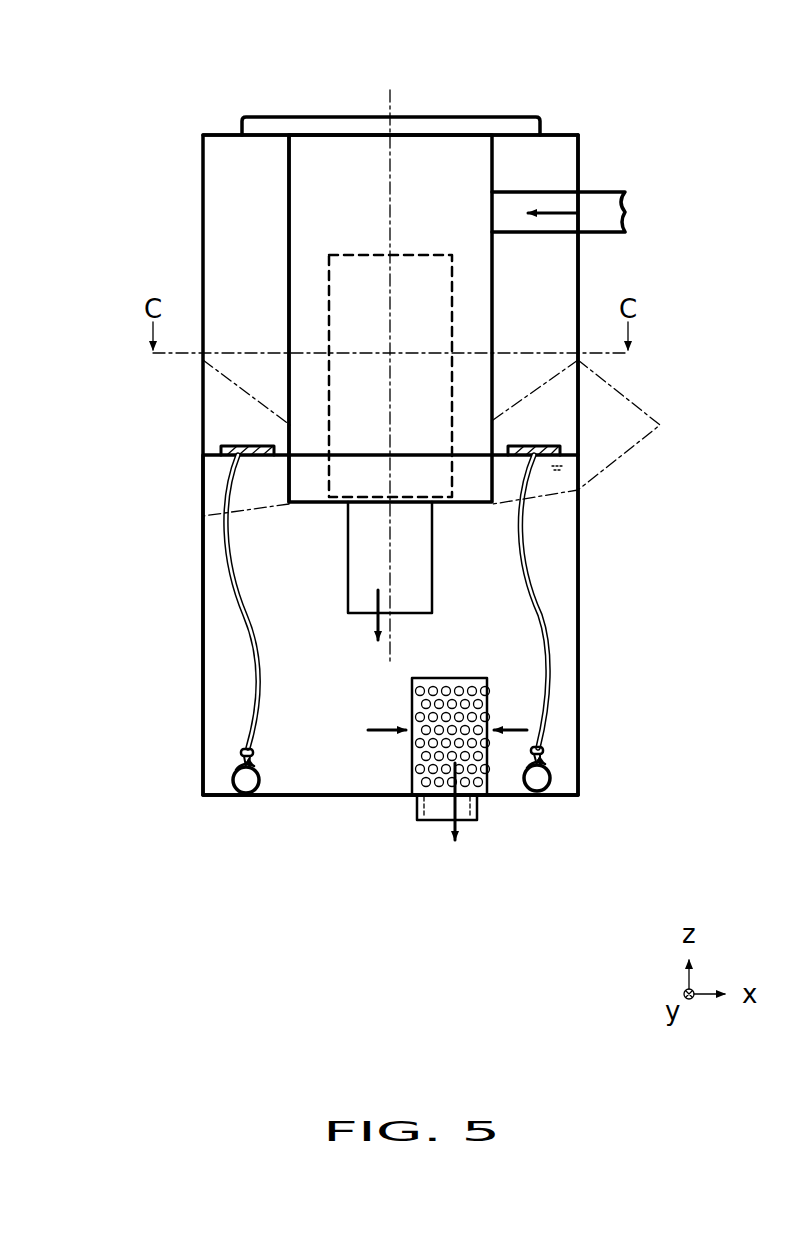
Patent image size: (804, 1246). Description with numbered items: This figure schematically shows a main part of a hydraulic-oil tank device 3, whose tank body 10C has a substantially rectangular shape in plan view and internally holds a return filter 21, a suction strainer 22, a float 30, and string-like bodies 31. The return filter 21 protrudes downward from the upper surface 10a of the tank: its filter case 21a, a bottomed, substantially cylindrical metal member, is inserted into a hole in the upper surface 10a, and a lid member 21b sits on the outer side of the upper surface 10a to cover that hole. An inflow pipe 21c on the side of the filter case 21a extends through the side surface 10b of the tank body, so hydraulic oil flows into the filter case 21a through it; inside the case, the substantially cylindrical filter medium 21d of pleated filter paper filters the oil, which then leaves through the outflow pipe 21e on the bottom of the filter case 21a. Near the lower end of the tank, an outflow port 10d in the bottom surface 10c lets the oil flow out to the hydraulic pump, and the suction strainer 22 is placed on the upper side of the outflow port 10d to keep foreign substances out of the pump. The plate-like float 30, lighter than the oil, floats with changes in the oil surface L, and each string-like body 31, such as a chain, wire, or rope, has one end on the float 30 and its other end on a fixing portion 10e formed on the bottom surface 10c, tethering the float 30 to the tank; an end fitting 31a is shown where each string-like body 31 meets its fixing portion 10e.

The hydraulic-oil tank device 3 is at (655, 39).
The upper surface 10a is at (563, 133).
The side surface 10b is at (583, 265).
The tank body 10C is at (583, 565).
The bottom surface 10c is at (565, 797).
The outflow port 10d is at (477, 822).
The fixing portion 10e is at (234, 795).
The return filter 21 is at (285, 185).
The filter case 21a is at (287, 290).
The lid member 21b is at (262, 128).
The inflow pipe 21c is at (598, 193).
The filter medium 21d is at (330, 462).
The outflow pipe 21e is at (348, 574).
The suction strainer 22 is at (488, 710).
The float 30 is at (231, 450).
The string-like body 31 is at (254, 707).
The nozzle 31a is at (241, 752).
The oil surface L is at (580, 455).